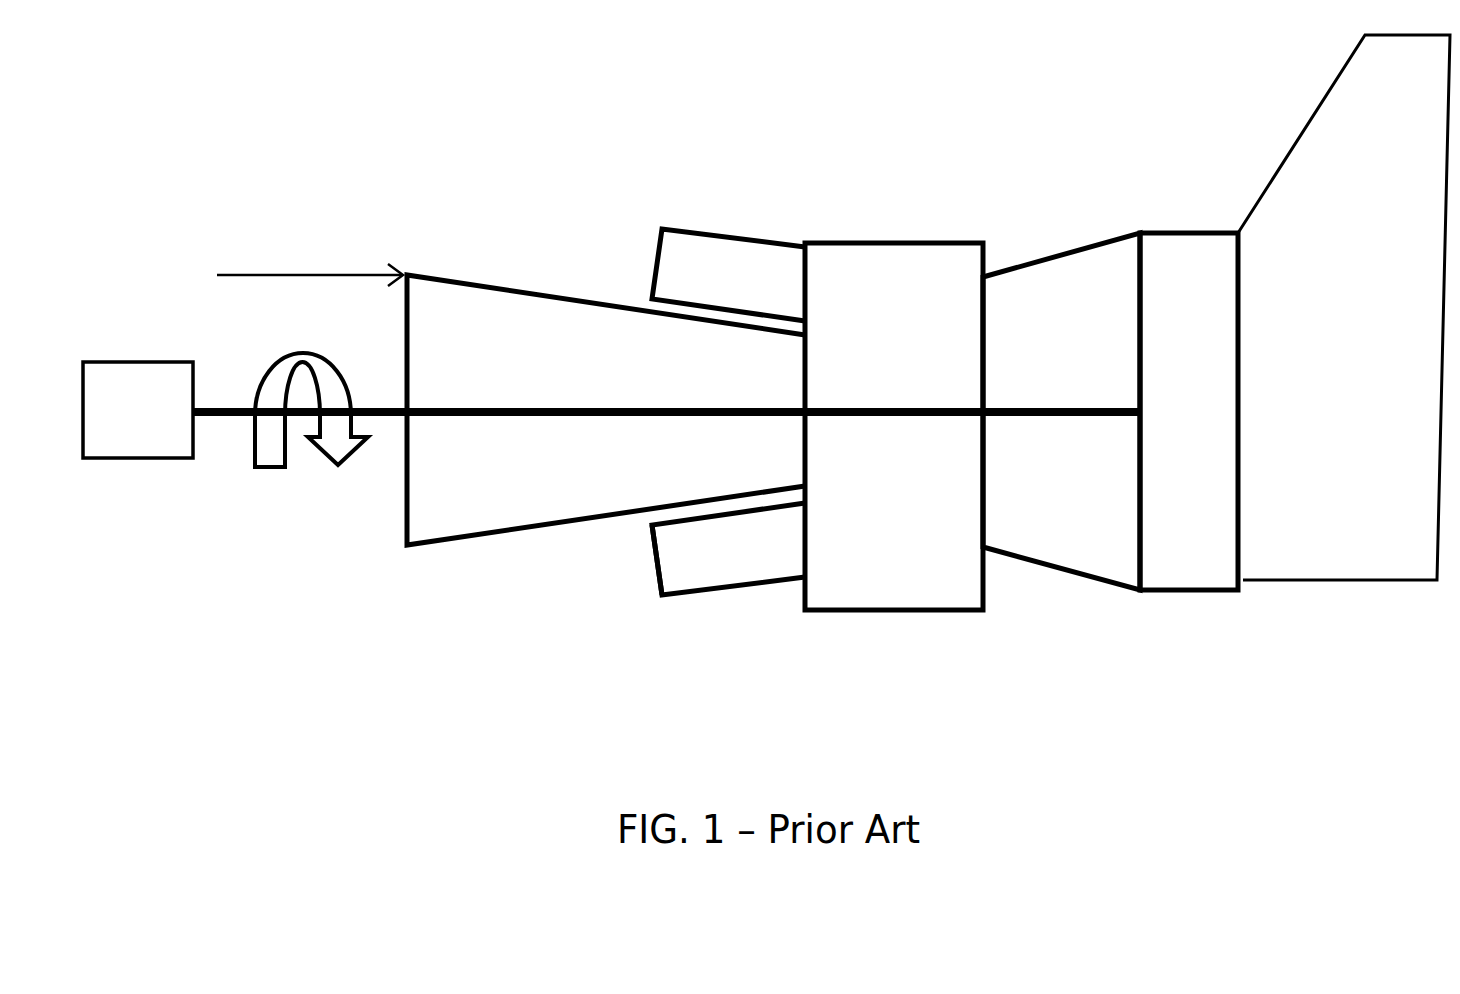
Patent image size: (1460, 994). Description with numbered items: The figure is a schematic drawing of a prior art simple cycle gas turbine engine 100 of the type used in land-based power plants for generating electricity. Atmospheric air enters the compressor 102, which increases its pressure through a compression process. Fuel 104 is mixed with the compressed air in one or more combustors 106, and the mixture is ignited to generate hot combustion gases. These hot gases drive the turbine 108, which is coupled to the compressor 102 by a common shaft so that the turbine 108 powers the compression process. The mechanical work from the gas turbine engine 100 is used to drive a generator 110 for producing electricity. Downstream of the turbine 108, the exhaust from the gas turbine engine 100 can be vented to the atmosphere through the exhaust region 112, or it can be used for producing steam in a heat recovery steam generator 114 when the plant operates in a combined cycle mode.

The gas turbine engine 100 is at (341, 528).
The compressor 102 is at (562, 368).
The fuel 104 is at (650, 591).
The combustor 106 is at (765, 287).
The turbine 108 is at (1087, 370).
The generator 110 is at (160, 422).
The exhaust region 112 is at (1207, 355).
The heat recovery steam generator 114 is at (1370, 368).